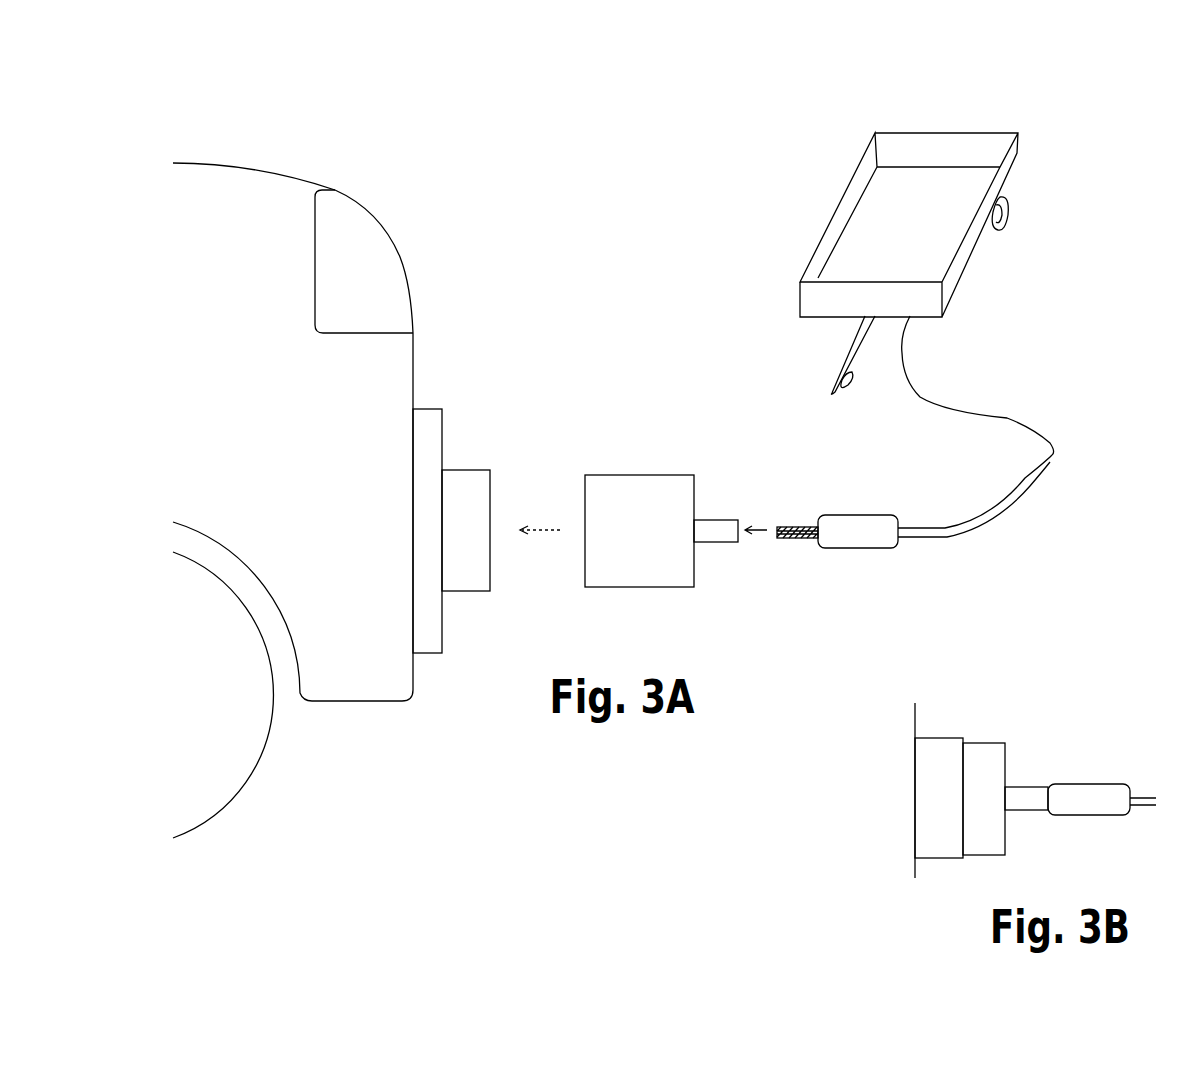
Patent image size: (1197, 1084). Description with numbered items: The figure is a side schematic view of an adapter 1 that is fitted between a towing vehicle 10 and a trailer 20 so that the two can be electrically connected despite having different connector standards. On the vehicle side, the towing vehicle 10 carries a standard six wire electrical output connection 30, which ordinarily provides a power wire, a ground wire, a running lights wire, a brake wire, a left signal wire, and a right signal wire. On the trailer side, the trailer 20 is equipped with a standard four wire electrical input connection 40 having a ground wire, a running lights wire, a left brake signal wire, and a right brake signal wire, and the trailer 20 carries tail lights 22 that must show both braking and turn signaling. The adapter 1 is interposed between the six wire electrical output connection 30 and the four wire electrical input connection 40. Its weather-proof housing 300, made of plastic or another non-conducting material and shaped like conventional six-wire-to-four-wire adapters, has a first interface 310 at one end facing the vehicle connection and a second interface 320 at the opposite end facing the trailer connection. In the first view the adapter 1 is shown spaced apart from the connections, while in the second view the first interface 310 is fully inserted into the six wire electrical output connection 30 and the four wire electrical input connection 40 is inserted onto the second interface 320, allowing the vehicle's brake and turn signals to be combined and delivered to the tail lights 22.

In FIG. 3A, the towing vehicle 10 is at (290, 170).
In FIG. 3A, the standard six wire electrical output connection 30 is at (470, 470).
In FIG. 3B, the standard six wire electrical output connection 30 is at (943, 768).
In FIG. 3A, the adapter 1 is at (641, 484).
In FIG. 3A, the housing 300 is at (660, 497).
In FIG. 3B, the housing 300 is at (983, 760).
In FIG. 3A, the first interface 310 is at (585, 520).
In FIG. 3A, the second interface 320 is at (723, 541).
In FIG. 3B, the second interface 320 is at (1035, 810).
In FIG. 3A, the standard four wire electrical input connection 40 is at (875, 515).
In FIG. 3B, the standard four wire electrical input connection 40 is at (1103, 784).
In FIG. 3A, the trailer 20 is at (827, 217).
In FIG. 3A, the tail lights 22 is at (1022, 158).